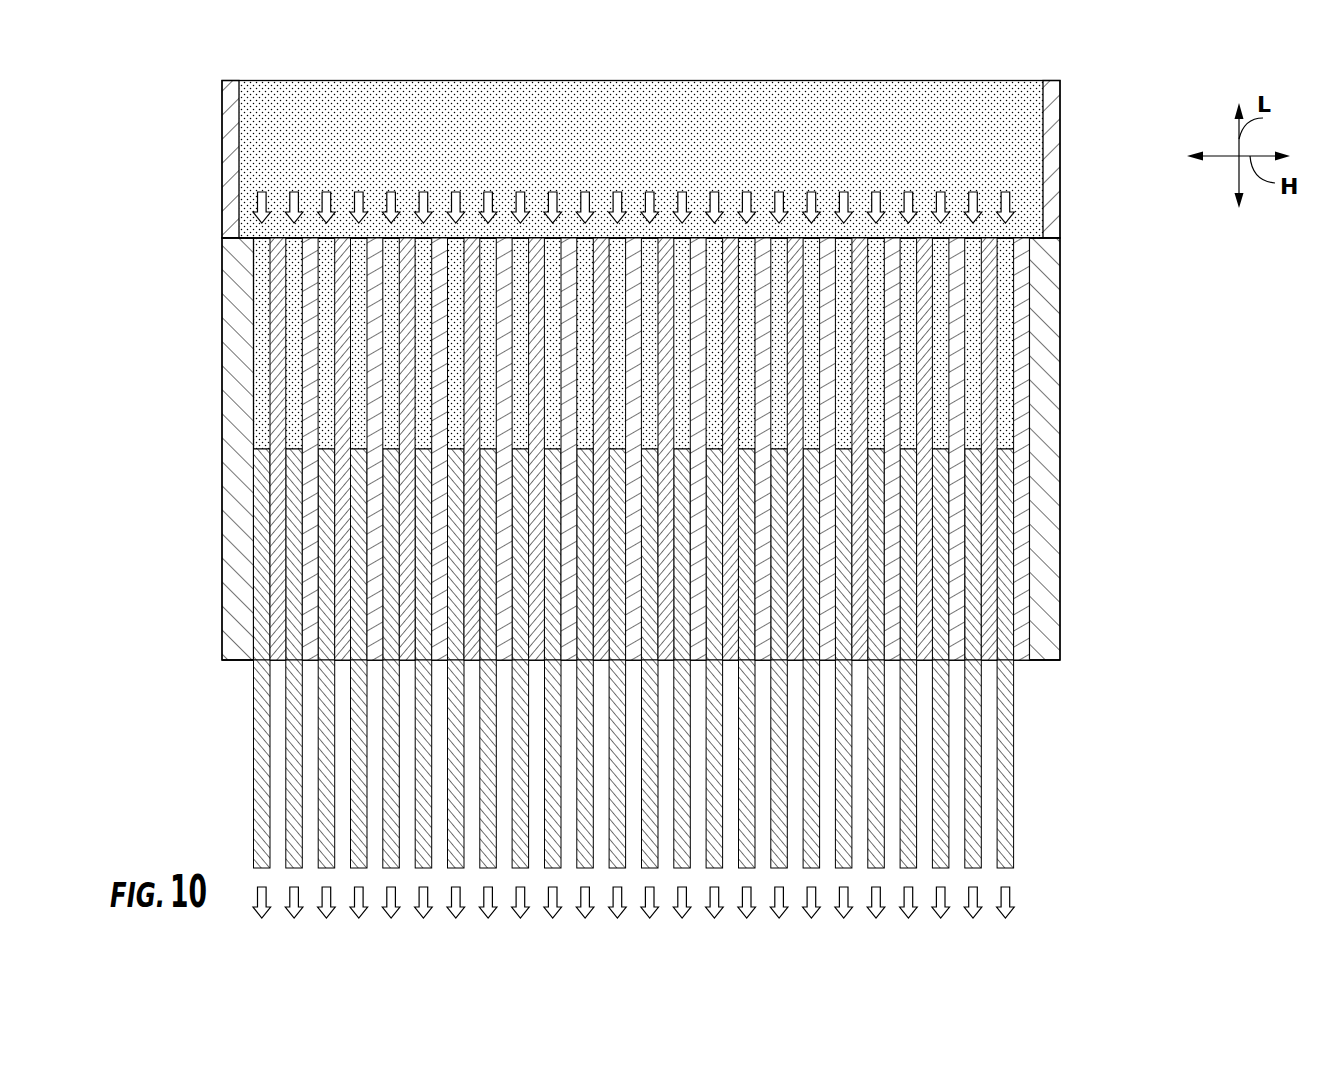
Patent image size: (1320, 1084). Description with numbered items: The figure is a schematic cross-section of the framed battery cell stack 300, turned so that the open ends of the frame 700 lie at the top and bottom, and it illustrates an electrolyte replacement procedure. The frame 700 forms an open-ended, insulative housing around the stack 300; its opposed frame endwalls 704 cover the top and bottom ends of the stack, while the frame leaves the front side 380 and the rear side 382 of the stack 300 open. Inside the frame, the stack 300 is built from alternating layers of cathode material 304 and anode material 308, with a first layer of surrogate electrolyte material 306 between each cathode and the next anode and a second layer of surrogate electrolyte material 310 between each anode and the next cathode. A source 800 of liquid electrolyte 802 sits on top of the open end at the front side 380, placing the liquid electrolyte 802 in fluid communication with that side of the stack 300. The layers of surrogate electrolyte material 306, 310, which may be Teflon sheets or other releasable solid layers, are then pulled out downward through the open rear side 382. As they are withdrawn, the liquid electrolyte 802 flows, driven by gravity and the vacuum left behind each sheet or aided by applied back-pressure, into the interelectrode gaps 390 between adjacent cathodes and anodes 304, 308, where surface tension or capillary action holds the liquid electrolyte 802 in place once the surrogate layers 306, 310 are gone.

The battery cell stack 300 is at (1020, 553).
The cathode material layer 304 is at (955, 323).
The first layer of surrogate electrolyte material 306 is at (630, 764).
The anode material layer 308 is at (342, 386).
The second layer of surrogate electrolyte material 310 is at (252, 792).
The front side of the stack 380 is at (1031, 226).
The rear side of the stack 382 is at (1024, 671).
The interelectrode gaps 390 is at (981, 400).
The frame 700 is at (216, 290).
The frame endwalls 704 is at (220, 420).
The source of liquid electrolyte 800 is at (228, 143).
The liquid electrolyte 802 is at (641, 154).